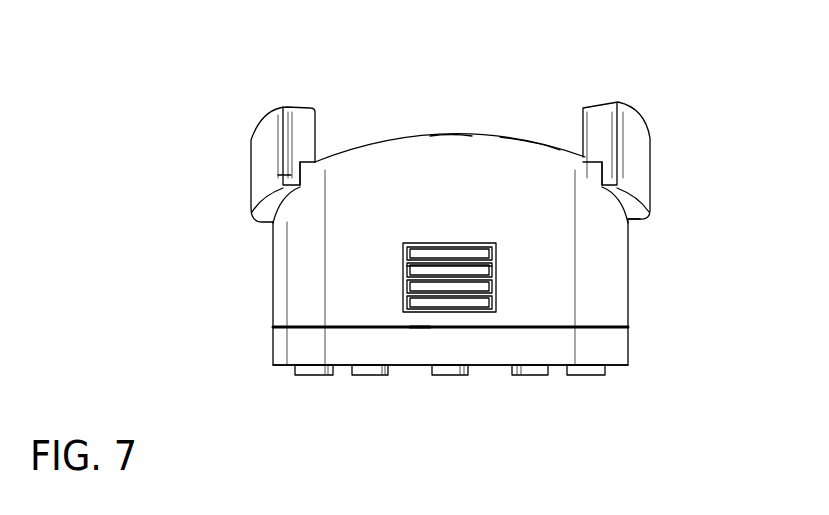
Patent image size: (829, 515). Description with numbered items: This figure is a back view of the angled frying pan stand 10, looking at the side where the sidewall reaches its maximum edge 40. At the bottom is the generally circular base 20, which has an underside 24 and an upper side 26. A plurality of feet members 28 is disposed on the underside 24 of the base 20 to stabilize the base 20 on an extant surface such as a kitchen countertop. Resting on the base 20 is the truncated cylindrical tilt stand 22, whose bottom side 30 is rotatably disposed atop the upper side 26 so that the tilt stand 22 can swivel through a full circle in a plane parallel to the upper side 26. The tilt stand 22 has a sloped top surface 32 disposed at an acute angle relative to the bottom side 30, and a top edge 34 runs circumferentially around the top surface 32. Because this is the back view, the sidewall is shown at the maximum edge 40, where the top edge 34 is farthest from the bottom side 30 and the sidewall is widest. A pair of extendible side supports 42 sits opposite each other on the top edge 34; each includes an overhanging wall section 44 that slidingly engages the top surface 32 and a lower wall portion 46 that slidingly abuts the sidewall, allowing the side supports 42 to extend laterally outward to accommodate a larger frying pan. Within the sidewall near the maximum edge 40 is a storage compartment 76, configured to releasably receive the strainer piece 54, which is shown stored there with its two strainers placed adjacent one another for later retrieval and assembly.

The angled frying pan stand 10 is at (464, 225).
The base 20 is at (293, 345).
The tilt stand 22 is at (590, 288).
The underside 24 is at (495, 375).
The upper side 26 is at (605, 322).
The feet members 28 is at (373, 376).
The bottom side 30 is at (420, 340).
The top surface 32 is at (412, 121).
The top edge 34 is at (523, 138).
The maximum edge 40 is at (450, 134).
The extendible side supports 42 is at (270, 125).
The overhanging wall section 44 is at (307, 156).
The lower wall portion 46 is at (291, 176).
The strainer piece 54 is at (477, 260).
The storage compartment 76 is at (418, 268).